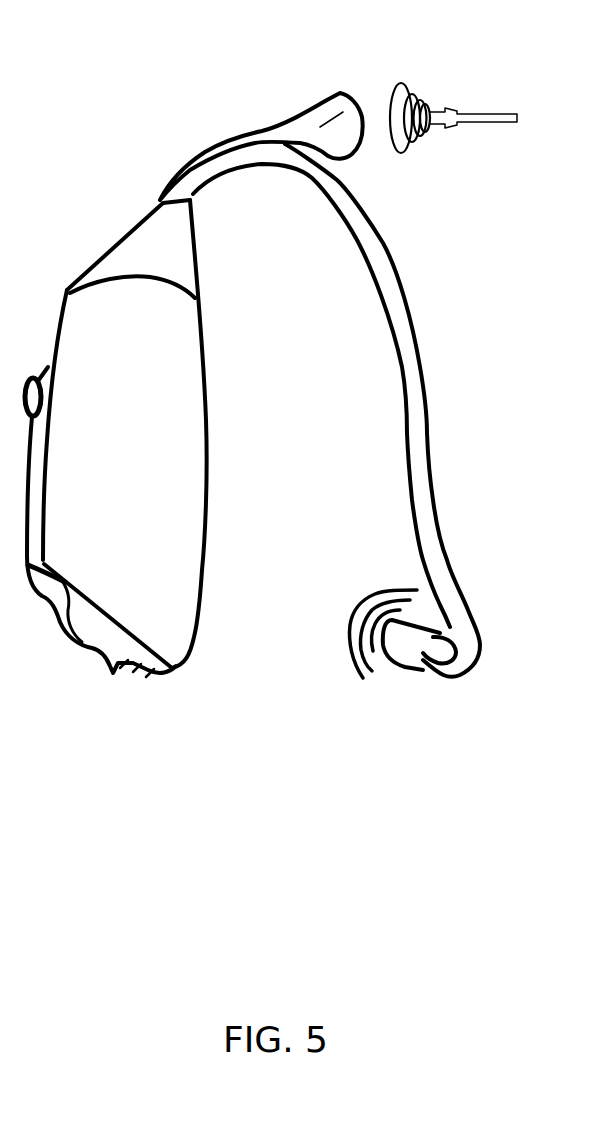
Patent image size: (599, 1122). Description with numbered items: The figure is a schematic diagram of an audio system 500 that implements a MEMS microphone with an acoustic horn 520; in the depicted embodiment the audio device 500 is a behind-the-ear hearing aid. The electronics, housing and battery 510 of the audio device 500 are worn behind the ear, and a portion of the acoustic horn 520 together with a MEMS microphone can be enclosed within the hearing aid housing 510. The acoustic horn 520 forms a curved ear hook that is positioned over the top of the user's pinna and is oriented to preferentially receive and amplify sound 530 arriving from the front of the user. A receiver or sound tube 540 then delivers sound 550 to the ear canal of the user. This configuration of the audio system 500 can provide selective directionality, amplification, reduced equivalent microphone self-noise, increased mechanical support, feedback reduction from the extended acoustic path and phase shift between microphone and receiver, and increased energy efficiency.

The audio system 500 is at (100, 743).
The housing 510 is at (167, 407).
The acoustic horn 520 is at (357, 110).
The sound 530 is at (399, 84).
The receiver or sound tube 540 is at (410, 648).
The sound 550 is at (373, 591).